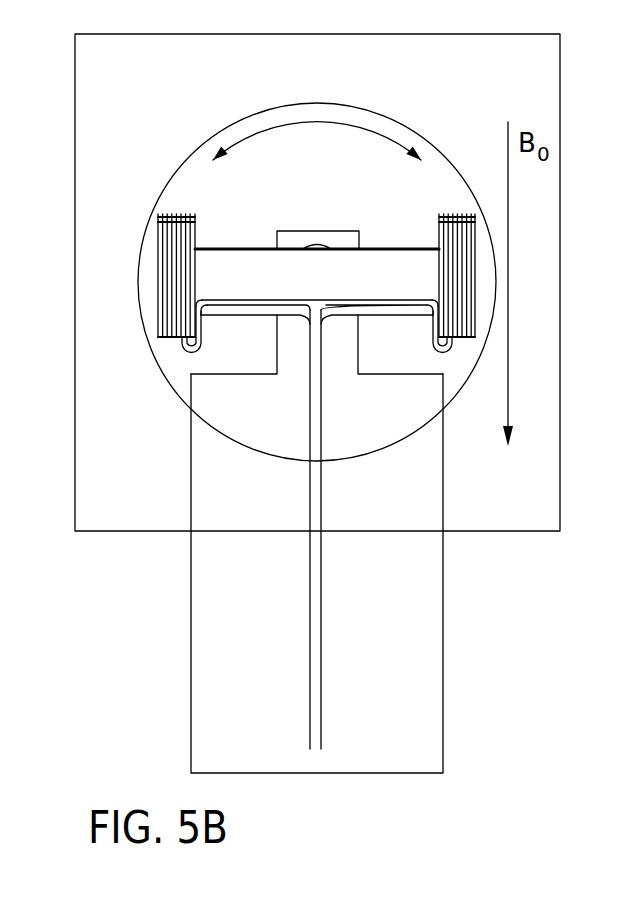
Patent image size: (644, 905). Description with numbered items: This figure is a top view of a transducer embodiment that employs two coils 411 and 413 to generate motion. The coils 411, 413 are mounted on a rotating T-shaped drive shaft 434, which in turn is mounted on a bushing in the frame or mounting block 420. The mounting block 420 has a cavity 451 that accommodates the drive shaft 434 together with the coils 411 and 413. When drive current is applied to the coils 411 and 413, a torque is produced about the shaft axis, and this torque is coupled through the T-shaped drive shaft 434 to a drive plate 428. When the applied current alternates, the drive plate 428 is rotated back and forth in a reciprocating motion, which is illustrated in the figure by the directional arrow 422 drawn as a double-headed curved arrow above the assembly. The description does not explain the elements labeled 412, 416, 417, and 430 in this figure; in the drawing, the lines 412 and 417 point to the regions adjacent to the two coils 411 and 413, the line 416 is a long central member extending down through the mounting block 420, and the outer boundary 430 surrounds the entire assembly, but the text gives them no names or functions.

The coil 411 is at (176, 216).
The first coil lead 412 is at (158, 247).
The coil 413 is at (453, 214).
The transmission line 416 is at (321, 639).
The second coil lead 417 is at (477, 248).
The mounting block 420 is at (443, 672).
The directional arrow 422 is at (318, 122).
The drive plate 428 is at (172, 363).
The magnet 430 is at (560, 47).
The drive shaft 434 is at (208, 250).
The cavity 451 is at (317, 247).